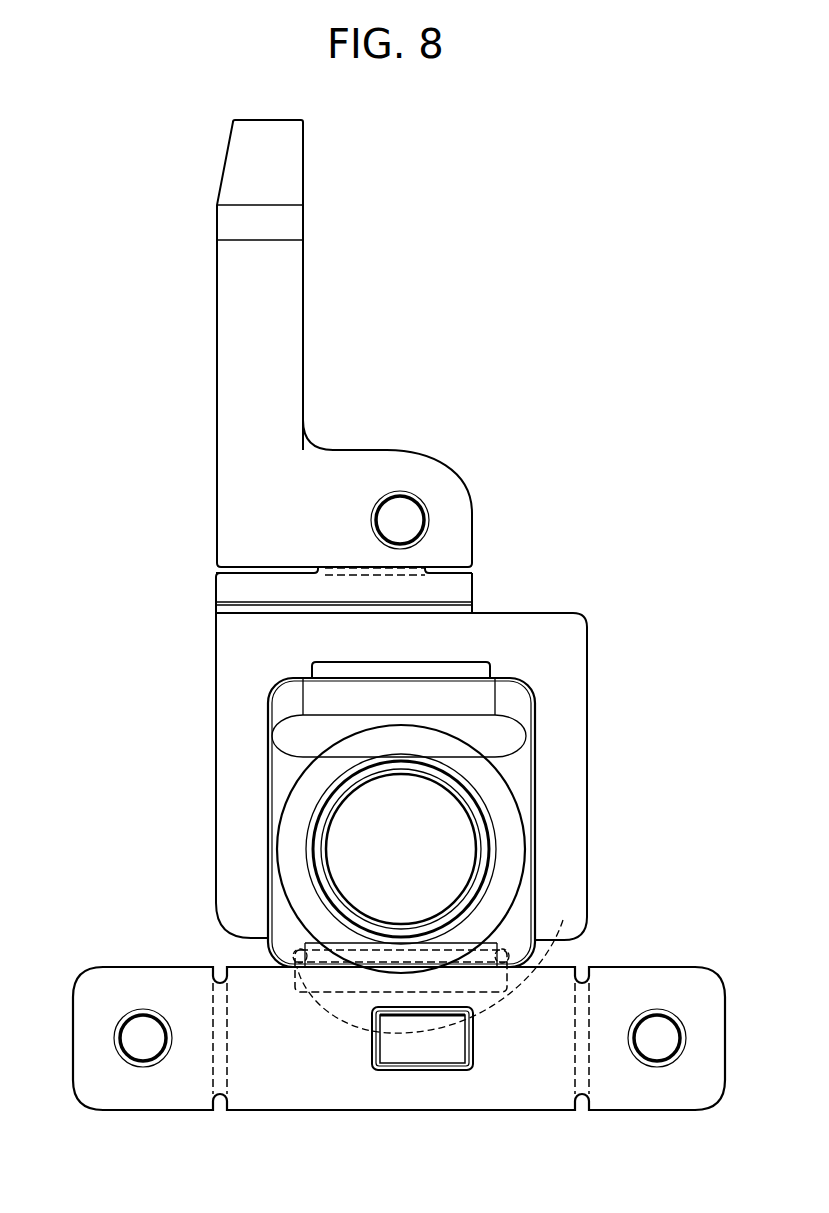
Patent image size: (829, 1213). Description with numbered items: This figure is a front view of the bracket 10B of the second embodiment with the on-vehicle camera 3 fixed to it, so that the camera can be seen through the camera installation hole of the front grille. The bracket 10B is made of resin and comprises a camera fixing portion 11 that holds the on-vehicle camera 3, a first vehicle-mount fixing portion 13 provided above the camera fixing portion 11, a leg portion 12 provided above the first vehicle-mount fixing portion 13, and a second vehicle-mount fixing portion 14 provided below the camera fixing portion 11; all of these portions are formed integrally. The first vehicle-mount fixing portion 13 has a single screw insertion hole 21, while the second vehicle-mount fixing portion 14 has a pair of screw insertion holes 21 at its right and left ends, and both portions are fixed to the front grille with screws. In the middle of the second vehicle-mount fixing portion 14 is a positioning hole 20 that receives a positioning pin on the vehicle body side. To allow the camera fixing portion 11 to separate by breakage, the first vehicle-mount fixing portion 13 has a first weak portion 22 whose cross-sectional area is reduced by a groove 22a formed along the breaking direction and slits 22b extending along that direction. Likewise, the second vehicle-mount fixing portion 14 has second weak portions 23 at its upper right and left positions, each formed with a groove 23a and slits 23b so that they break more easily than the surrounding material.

The bracket 10B is at (160, 462).
The on-vehicle camera 3 is at (290, 850).
The camera fixing portion 11 is at (578, 712).
The leg portion 12 is at (291, 321).
The first vehicle-mount fixing portion 13 is at (382, 458).
The second vehicle-mount fixing portion 14 is at (510, 1100).
The positioning hole 20 is at (432, 1053).
The screw insertion hole 21 is at (410, 510).
The first weak portion 22 is at (558, 550).
The groove 22a is at (410, 571).
The slits 22b is at (314, 566).
The second weak portions 23 is at (680, 842).
The groove 23a is at (498, 950).
The slits 23b is at (563, 920).